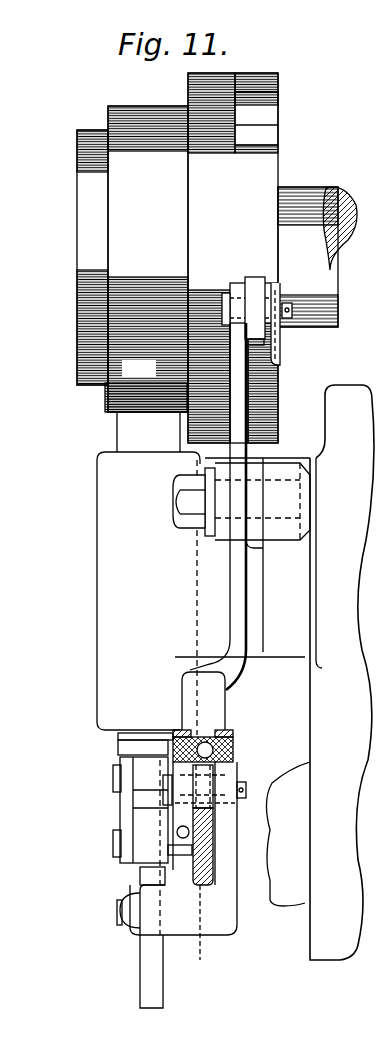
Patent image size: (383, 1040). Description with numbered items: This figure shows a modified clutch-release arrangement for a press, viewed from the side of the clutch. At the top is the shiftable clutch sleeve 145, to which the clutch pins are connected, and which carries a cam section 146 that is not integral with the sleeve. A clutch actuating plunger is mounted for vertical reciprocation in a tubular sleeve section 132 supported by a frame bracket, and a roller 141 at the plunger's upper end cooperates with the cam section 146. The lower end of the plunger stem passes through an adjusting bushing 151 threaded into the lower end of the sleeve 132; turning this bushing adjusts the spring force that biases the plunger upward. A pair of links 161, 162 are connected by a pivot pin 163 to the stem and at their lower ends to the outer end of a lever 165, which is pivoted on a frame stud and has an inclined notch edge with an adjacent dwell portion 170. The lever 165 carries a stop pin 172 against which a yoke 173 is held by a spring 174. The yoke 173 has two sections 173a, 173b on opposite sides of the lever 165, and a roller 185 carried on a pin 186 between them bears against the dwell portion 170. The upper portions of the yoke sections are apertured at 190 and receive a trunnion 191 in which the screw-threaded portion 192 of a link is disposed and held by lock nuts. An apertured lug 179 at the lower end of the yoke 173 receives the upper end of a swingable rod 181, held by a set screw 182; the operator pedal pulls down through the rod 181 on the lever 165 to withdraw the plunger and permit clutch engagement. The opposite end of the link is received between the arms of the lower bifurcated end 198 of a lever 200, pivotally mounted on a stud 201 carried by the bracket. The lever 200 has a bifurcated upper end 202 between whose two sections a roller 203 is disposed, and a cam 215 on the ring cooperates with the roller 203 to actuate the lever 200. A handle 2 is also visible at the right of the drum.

The clutch sleeve 145 is at (140, 96).
The cam 215 is at (268, 117).
The handle 2 is at (338, 180).
The roller 203 is at (253, 283).
The bifurcated upper end 202 is at (280, 364).
The cam section 146 is at (173, 403).
The roller 141 is at (133, 427).
The tubular sleeve section 132 is at (97, 614).
The stud 201 is at (172, 500).
The lever 200 is at (218, 572).
The lower bifurcated end 198 is at (187, 694).
The yoke 173 is at (230, 845).
The trunnion 191 is at (233, 752).
The yoke section 173a is at (178, 735).
The yoke section 173b is at (233, 735).
The aperture 190 is at (212, 745).
The roller 185 is at (210, 778).
The pin 186 is at (247, 790).
The spring 174 is at (200, 817).
The dwell portion 170 is at (236, 803).
The lever 165 is at (194, 937).
The screw-threaded portion 192 is at (118, 733).
The adjusting bushing 151 is at (165, 750).
The link 162 is at (130, 818).
The pivot pin 163 is at (112, 780).
The link 161 is at (113, 840).
The stop pin 172 is at (168, 848).
The set screw 182 is at (112, 913).
The apertured lug 179 is at (135, 932).
The swingable rod 181 is at (140, 985).